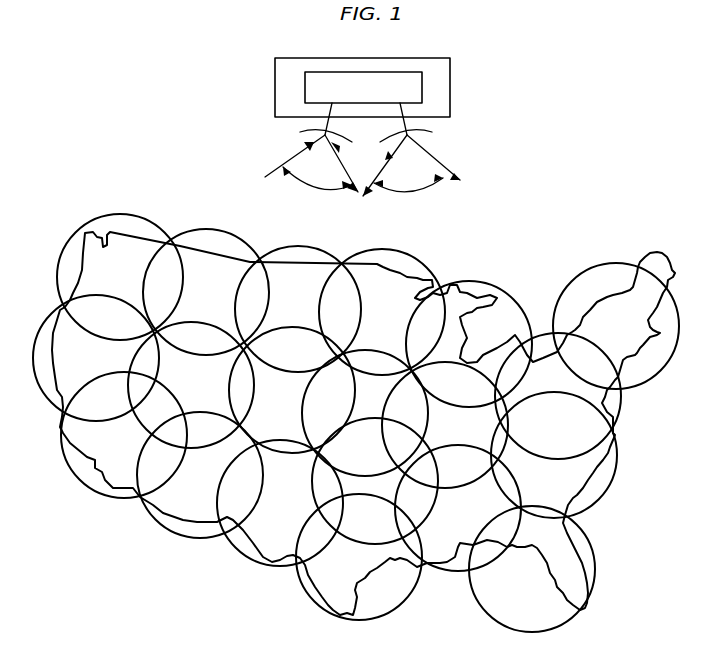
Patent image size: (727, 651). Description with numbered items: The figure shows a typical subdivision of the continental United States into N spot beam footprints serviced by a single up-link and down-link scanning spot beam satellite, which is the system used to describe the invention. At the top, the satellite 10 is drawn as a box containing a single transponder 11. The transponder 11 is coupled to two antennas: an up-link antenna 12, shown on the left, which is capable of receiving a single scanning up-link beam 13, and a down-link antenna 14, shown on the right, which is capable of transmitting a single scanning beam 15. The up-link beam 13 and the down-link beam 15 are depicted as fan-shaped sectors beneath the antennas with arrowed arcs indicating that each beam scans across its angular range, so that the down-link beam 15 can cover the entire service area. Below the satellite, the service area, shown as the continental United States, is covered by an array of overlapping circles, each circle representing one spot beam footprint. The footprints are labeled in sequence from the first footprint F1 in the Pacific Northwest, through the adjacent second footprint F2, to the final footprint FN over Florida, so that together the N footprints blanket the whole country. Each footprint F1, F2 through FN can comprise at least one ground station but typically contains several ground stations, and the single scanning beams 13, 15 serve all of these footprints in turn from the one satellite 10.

The satellite 10 is at (425, 62).
The transponder 11 is at (310, 84).
The up-link antenna 12 is at (300, 129).
The scanning up-link beam 13 is at (300, 187).
The down-link antenna 14 is at (430, 129).
The scanning beam 15 is at (427, 188).
The spot beam footprint F1 is at (120, 277).
The spot beam footprint F2 is at (206, 292).
The spot beam footprint FN is at (532, 569).